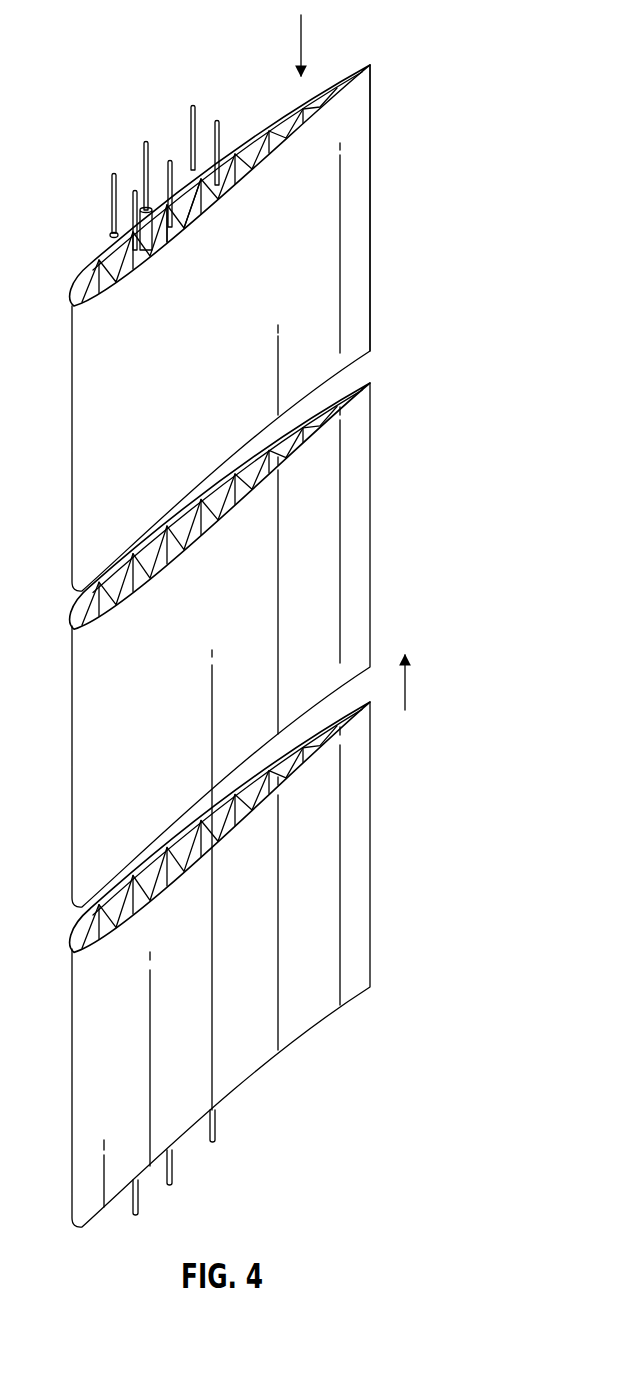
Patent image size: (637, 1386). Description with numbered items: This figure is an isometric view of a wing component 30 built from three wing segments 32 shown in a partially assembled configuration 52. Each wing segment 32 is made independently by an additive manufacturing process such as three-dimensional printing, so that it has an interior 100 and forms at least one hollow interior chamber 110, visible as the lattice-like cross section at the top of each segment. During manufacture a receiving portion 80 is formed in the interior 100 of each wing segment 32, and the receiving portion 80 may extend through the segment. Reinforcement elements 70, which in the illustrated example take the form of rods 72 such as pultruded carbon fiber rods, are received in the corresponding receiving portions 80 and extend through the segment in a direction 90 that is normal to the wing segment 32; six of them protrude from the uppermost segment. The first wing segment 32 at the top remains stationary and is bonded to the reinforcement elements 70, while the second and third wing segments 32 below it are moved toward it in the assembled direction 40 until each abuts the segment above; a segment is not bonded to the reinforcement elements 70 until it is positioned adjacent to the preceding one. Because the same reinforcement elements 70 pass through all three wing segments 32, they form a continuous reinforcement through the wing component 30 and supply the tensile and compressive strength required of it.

The wing component 30 is at (427, 80).
The wing segment 32 is at (370, 207).
The assembled direction 40 is at (407, 683).
The partially assembled configuration 52 is at (432, 347).
The reinforcement elements 70 is at (132, 140).
The rods 72 is at (110, 198).
The receiving portion 80 is at (112, 235).
The direction 90 is at (303, 47).
The interior 100 is at (247, 143).
The hollow interior chamber 110 is at (181, 188).